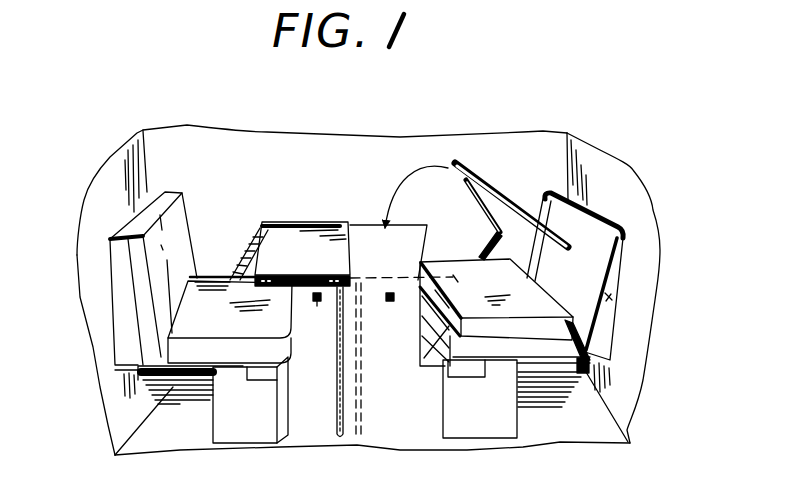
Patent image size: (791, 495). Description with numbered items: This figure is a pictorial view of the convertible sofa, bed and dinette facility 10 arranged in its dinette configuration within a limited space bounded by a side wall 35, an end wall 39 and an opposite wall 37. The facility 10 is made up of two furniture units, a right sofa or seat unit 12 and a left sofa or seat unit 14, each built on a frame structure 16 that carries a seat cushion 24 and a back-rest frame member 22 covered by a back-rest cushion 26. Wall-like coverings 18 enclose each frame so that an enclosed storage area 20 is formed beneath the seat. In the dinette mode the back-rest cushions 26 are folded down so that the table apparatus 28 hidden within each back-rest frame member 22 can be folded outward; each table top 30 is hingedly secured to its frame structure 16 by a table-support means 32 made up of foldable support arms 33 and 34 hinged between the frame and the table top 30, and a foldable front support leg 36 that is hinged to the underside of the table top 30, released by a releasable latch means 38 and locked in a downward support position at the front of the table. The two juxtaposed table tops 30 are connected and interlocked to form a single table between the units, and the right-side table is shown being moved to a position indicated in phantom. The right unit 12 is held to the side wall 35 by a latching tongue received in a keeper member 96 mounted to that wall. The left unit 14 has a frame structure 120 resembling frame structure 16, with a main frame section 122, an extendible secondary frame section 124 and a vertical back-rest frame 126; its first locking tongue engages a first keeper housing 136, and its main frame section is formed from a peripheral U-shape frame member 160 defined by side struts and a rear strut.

The convertible sofa, bed and dinette facility 10 is at (532, 120).
The right sofa or seat unit 12 is at (620, 258).
The left sofa or seat unit 14 is at (113, 274).
The frame structure 16 is at (582, 370).
The wall-like coverings 18 is at (235, 435).
The enclosed storage area 20 is at (183, 442).
The back-rest frame member 22 is at (617, 290).
The seat cushion 24 is at (210, 273).
The back-rest cushion 26 is at (182, 212).
The table apparatus 28 is at (303, 222).
The table top 30 is at (300, 263).
The table-support means 32 is at (477, 220).
The foldable support arm 33 is at (490, 259).
The foldable support arm 34 is at (237, 250).
The side wall 35 is at (250, 148).
The foldable front support leg 36 is at (357, 377).
The side wall 37 is at (595, 172).
The releasable latch means 38 is at (324, 304).
The end wall 39 is at (120, 172).
The keeper member 96 is at (393, 303).
The frame structure 120 is at (170, 387).
The main frame section 122 is at (120, 375).
The extendible secondary frame section 124 is at (247, 370).
The vertical back-rest frame 126 is at (112, 312).
The first keeper housing 136 is at (313, 298).
The peripheral U-shape frame member 160 is at (475, 198).